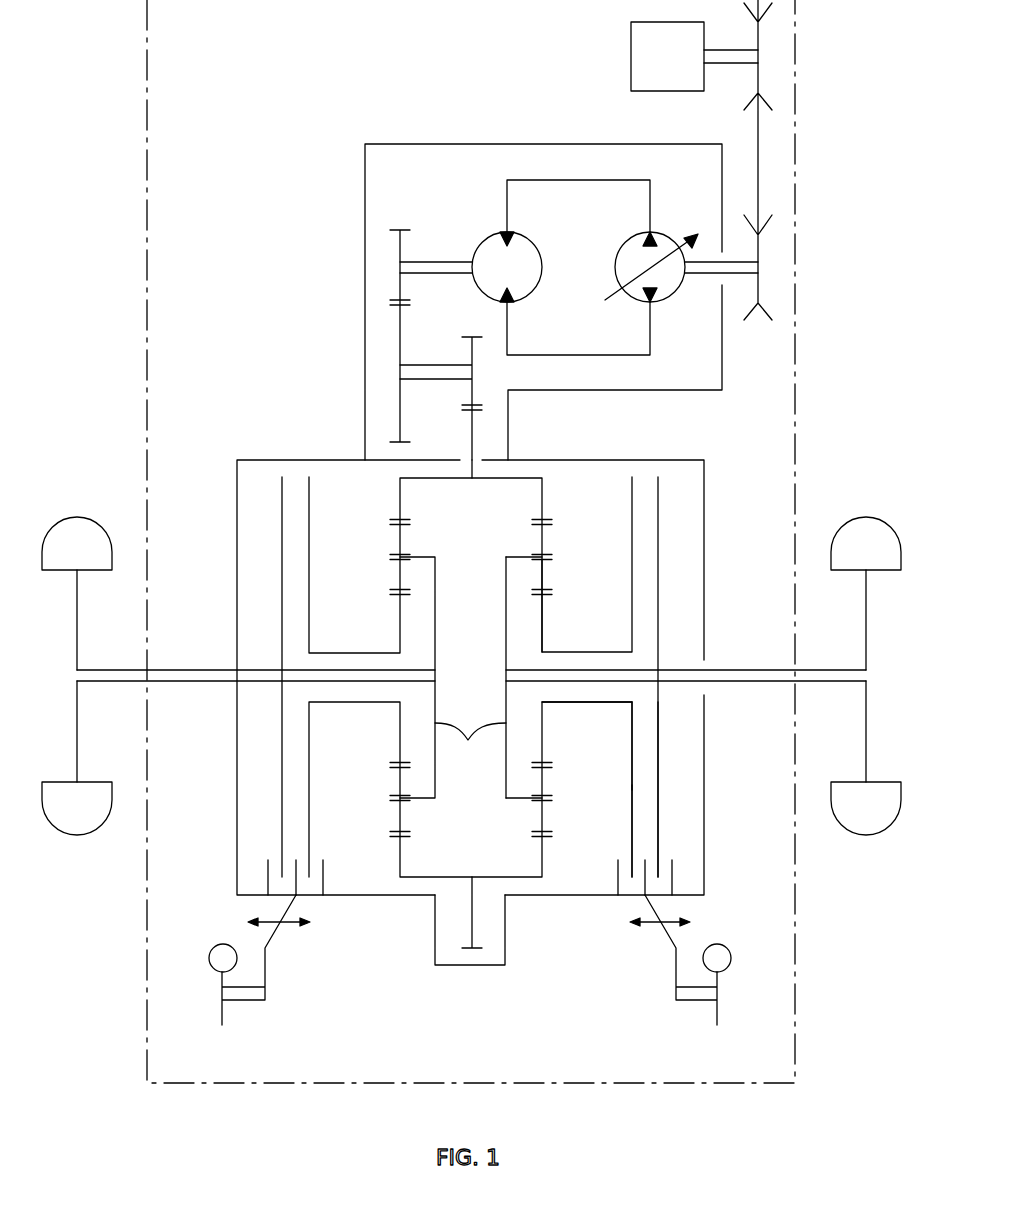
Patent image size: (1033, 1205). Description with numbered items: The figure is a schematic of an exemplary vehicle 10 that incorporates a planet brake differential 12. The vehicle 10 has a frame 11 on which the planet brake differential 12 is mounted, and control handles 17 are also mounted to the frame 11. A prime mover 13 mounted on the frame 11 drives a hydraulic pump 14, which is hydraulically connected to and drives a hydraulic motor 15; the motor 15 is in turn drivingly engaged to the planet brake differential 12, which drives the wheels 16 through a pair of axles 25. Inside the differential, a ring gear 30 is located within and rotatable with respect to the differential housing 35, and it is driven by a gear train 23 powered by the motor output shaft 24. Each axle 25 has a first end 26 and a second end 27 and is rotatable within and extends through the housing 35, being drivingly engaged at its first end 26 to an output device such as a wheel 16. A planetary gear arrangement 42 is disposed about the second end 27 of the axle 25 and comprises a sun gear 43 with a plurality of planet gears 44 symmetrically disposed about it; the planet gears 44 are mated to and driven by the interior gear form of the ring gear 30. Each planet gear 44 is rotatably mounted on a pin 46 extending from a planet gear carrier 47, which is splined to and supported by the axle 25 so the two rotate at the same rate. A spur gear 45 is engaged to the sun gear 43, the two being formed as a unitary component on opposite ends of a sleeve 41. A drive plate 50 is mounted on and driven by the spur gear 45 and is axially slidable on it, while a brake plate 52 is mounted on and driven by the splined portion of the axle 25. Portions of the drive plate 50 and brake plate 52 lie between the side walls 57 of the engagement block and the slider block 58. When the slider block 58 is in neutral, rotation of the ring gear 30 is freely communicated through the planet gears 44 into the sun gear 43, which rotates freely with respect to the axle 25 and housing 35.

The vehicle 10 is at (828, 123).
The frame 11 is at (795, 372).
The planet brake differential 12 is at (557, 944).
The prime mover 13 is at (631, 57).
The hydraulic pump 14 is at (628, 250).
The hydraulic motor 15 is at (535, 290).
The wheels 16 is at (75, 834).
The control handles 17 is at (216, 946).
The gear train 23 is at (386, 330).
The motor output shaft 24 is at (437, 260).
The axle 25 is at (198, 668).
The first end 26 is at (840, 688).
The second end 27 is at (520, 668).
The ring gear 30 is at (472, 440).
The differential housing 35 is at (262, 458).
The sleeve 41 is at (565, 702).
The planetary gear arrangement 42 is at (540, 658).
The sun gear 43 is at (545, 622).
The planet gears 44 is at (545, 575).
The spur gear 45 is at (632, 700).
The pin 46 is at (526, 557).
The planet gear carrier 47 is at (448, 678).
The drive plate 50 is at (632, 785).
The brake plate 52 is at (658, 752).
The side walls 57 is at (618, 877).
The slider block 58 is at (632, 890).